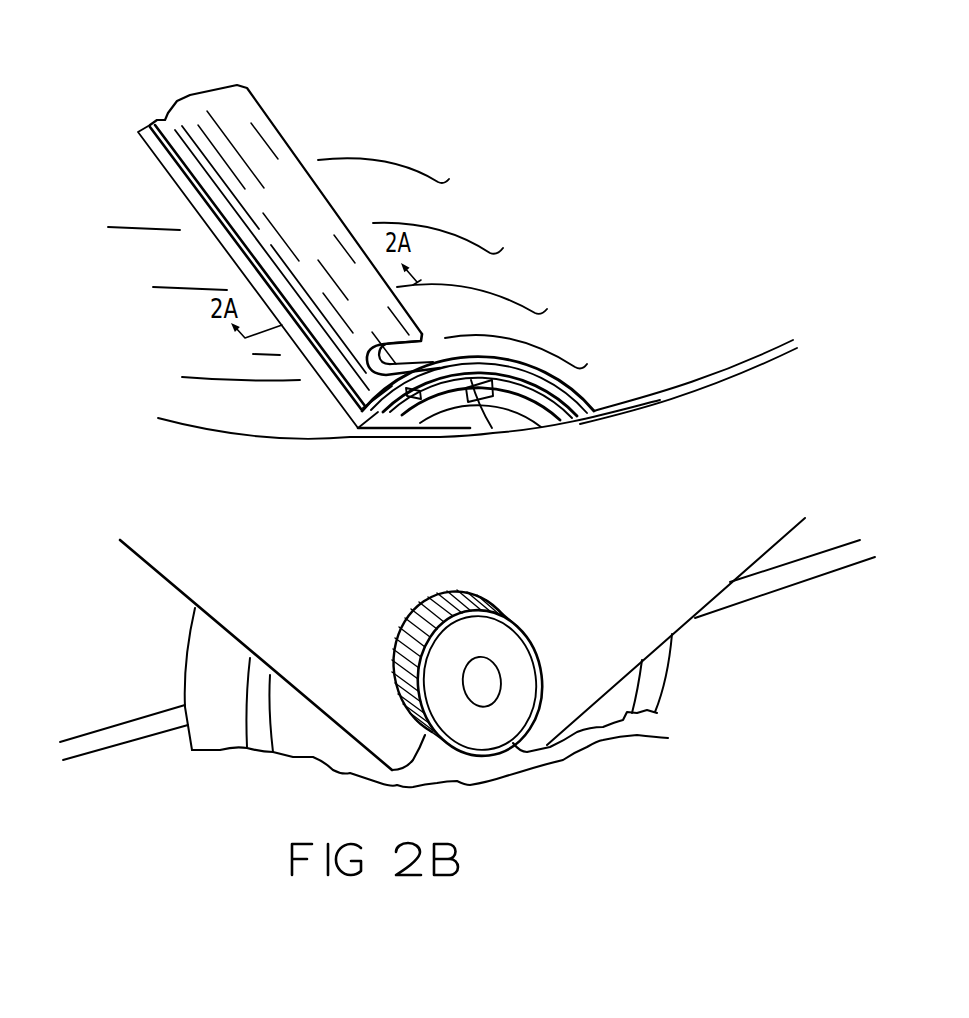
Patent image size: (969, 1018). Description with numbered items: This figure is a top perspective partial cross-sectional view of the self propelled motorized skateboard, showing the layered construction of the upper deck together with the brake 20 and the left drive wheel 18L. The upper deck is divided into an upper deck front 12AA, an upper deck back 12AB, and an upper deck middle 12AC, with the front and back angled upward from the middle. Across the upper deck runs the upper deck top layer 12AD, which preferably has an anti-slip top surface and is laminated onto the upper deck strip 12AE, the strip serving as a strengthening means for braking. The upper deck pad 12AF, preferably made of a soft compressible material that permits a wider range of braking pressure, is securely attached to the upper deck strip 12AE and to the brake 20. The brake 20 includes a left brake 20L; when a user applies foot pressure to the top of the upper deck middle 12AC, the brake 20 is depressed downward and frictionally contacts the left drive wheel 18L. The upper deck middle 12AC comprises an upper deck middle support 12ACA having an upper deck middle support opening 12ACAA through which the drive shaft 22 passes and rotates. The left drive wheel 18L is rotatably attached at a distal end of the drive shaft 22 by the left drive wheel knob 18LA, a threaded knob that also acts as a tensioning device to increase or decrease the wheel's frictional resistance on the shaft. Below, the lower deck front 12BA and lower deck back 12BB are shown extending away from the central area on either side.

The upper deck top layer 12AD is at (248, 140).
The upper deck strip 12AE is at (243, 224).
The upper deck pad 12AF is at (168, 167).
The upper deck middle 12AC is at (398, 213).
The upper deck front 12AA is at (103, 318).
The upper deck back 12AB is at (710, 296).
The upper deck middle support 12ACA is at (498, 518).
The brake 20 is at (497, 366).
The left brake 20L is at (520, 433).
The left drive wheel 18L is at (462, 432).
The left drive wheel knob 18LA is at (508, 640).
The lower deck back 12BB is at (795, 575).
The lower deck front 12BA is at (149, 727).
The drive shaft 22 is at (668, 738).
The upper deck middle support opening 12ACAA is at (525, 760).